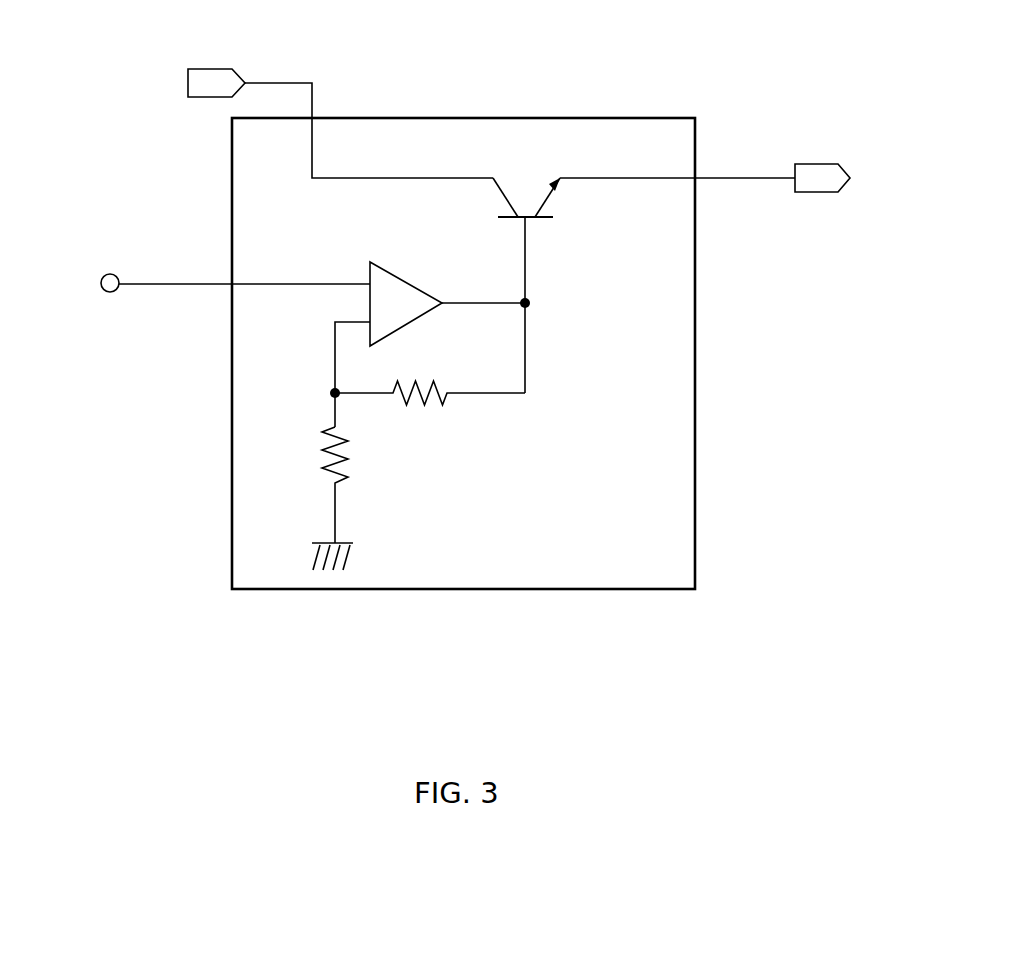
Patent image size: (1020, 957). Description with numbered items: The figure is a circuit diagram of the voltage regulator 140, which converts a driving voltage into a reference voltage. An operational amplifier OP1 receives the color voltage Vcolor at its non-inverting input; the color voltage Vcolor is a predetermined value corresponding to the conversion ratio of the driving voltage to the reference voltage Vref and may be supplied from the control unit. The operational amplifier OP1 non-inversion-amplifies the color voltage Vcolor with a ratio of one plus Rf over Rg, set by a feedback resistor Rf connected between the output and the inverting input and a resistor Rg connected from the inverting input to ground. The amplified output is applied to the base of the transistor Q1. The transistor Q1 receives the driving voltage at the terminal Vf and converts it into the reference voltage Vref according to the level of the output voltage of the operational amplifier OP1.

The voltage regulator 140 is at (501, 38).
The transistor Q1 is at (544, 271).
The operational amplifier OP1 is at (403, 280).
The feedback resistor Rf is at (427, 406).
The gain resistor Rg is at (318, 498).
The driving voltage input Vf is at (325, 123).
The reference voltage Vref is at (727, 178).
The color voltage Vcolor is at (198, 282).